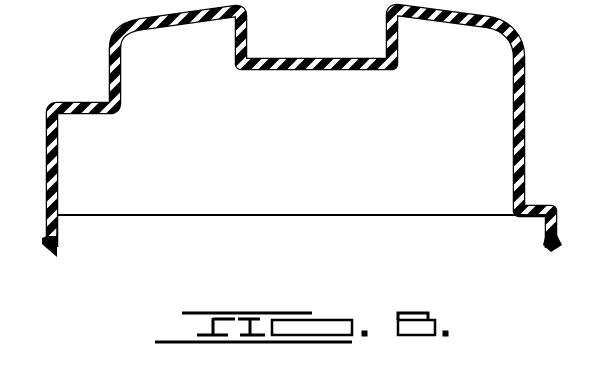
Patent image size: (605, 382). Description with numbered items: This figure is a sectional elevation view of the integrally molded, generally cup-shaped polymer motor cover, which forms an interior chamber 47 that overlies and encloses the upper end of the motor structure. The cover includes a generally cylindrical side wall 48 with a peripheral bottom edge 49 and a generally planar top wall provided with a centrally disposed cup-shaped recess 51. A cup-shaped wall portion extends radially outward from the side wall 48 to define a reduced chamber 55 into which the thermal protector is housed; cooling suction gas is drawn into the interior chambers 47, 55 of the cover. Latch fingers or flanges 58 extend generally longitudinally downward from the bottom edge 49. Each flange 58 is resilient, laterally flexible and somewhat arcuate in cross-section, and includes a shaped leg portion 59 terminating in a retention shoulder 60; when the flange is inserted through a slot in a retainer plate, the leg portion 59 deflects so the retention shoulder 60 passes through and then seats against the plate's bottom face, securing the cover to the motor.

The interior chamber 47 is at (285, 136).
The side wall 48 is at (47, 133).
The bottom edge 49 is at (228, 216).
The cup-shaped recess 51 is at (323, 40).
The reduced chamber 55 is at (109, 167).
The latch fingers or flanges 58 is at (58, 228).
The leg portion 59 is at (47, 226).
The retention shoulder 60 is at (49, 253).